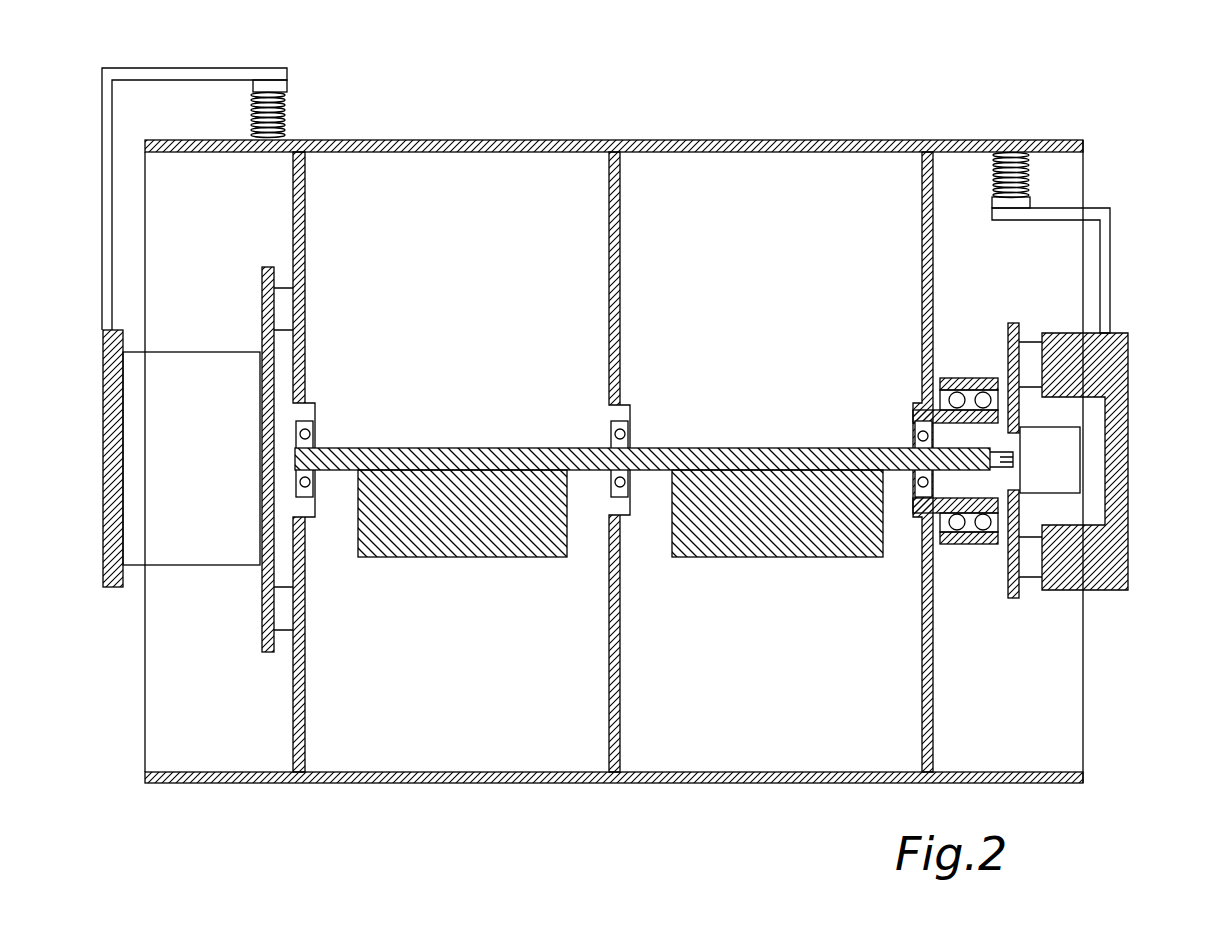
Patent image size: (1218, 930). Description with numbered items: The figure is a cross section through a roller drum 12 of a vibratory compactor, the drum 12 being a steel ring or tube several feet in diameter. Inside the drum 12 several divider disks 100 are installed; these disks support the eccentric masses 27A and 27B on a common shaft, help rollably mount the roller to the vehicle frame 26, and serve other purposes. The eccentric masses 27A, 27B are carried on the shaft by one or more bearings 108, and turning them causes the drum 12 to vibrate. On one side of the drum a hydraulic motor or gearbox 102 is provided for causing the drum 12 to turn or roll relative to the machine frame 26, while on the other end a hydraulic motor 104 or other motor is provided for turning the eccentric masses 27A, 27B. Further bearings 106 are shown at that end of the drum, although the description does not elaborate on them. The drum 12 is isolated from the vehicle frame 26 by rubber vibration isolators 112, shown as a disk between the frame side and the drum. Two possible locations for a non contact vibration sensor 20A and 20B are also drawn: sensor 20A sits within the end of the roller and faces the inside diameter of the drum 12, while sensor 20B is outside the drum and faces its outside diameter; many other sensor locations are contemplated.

The roller drum 12 is at (695, 140).
The non contact vibration sensor 20A is at (1030, 202).
The non contact vibration sensor 20B is at (287, 86).
The vehicle frame 26 is at (113, 588).
The eccentric mass 27A is at (455, 447).
The eccentric mass 27B is at (772, 447).
The divider disk 100 is at (620, 612).
The hydraulic motor or gearbox 102 is at (215, 352).
The hydraulic motor 104 is at (1083, 463).
The bearings 106 is at (957, 378).
The bearing 108 is at (308, 480).
The rubber vibration isolator 112 is at (265, 267).